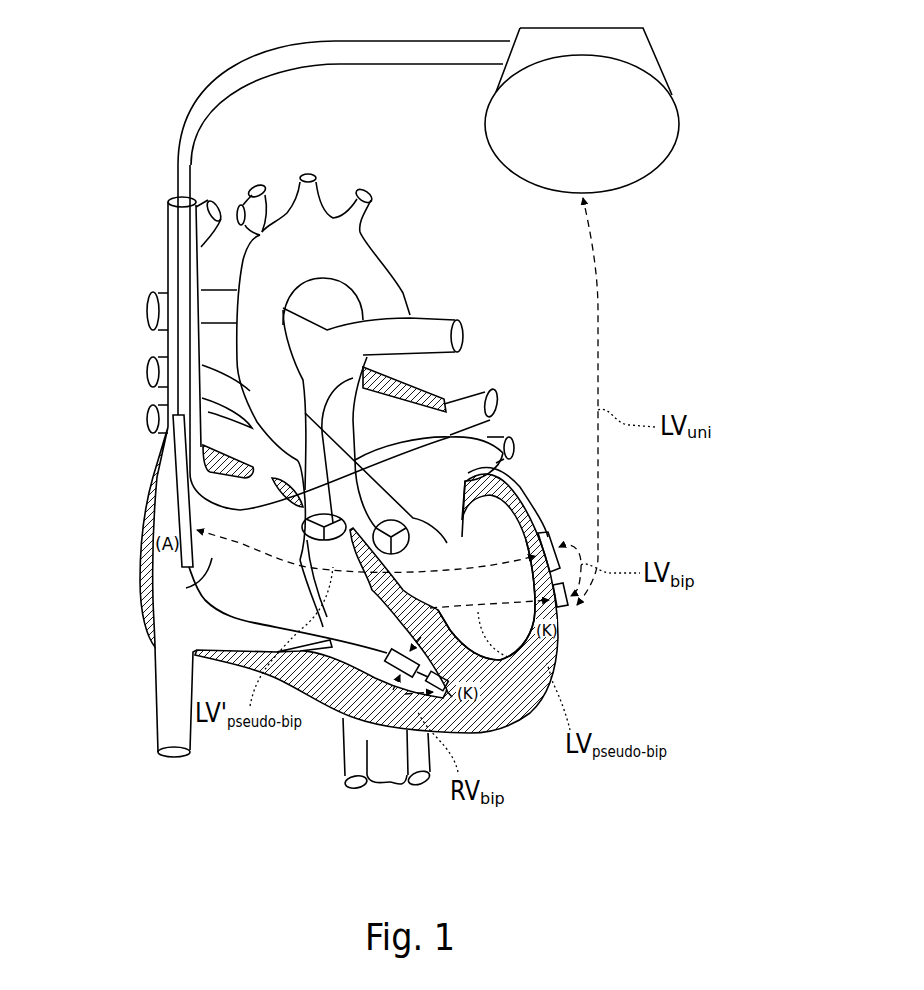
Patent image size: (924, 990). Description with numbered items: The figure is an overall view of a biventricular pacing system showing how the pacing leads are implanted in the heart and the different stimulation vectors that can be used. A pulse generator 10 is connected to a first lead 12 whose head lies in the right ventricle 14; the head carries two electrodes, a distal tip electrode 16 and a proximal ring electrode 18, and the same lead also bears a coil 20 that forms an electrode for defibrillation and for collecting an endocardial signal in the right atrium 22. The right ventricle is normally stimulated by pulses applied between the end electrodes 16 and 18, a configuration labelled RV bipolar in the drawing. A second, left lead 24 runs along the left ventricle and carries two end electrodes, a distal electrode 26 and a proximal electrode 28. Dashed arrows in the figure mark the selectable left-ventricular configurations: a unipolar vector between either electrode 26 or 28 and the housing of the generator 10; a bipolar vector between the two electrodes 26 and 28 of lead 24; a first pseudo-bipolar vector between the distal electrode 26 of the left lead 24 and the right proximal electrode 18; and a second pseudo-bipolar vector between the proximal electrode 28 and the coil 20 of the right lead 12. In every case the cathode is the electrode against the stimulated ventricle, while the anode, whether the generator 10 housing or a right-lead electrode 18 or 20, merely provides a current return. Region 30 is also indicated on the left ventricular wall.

The pulse generator 10 is at (670, 125).
The first lead 12 is at (300, 228).
The left lead 24 is at (191, 167).
The coil 20 is at (183, 493).
The right atrium 22 is at (212, 558).
The proximal electrode (ring) 18 is at (347, 663).
The right ventricle 14 is at (327, 682).
The distal electrode (tip) 16 is at (463, 715).
The proximal electrode 28 is at (548, 535).
The distal electrode 26 is at (568, 607).
The left ventricle 30 is at (512, 630).